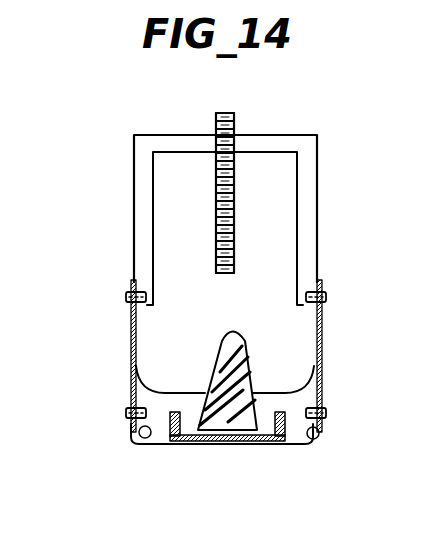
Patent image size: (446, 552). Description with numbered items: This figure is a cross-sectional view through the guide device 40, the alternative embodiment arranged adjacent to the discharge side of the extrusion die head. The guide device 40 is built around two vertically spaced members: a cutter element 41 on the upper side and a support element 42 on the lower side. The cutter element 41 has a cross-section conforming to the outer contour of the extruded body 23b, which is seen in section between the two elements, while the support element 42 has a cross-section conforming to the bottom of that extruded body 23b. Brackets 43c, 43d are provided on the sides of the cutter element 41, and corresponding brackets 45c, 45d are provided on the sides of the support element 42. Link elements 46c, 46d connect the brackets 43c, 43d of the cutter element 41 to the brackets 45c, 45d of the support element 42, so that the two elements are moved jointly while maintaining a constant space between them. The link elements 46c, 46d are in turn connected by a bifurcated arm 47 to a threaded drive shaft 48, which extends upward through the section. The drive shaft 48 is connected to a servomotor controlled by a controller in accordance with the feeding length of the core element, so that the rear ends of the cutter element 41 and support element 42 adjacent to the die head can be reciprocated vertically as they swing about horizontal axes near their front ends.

The guide device 40 is at (318, 136).
The bifurcated arm 47 is at (318, 210).
The threaded drive shaft 48 is at (215, 191).
The link element 46d is at (130, 328).
The link element 46c is at (323, 333).
The bracket 43d is at (140, 305).
The bracket 43c is at (314, 305).
The cutter element 41 is at (130, 367).
The extruded body 23b is at (238, 372).
The support element 42 is at (162, 443).
The bracket 45d is at (143, 438).
The bracket 45c is at (320, 437).